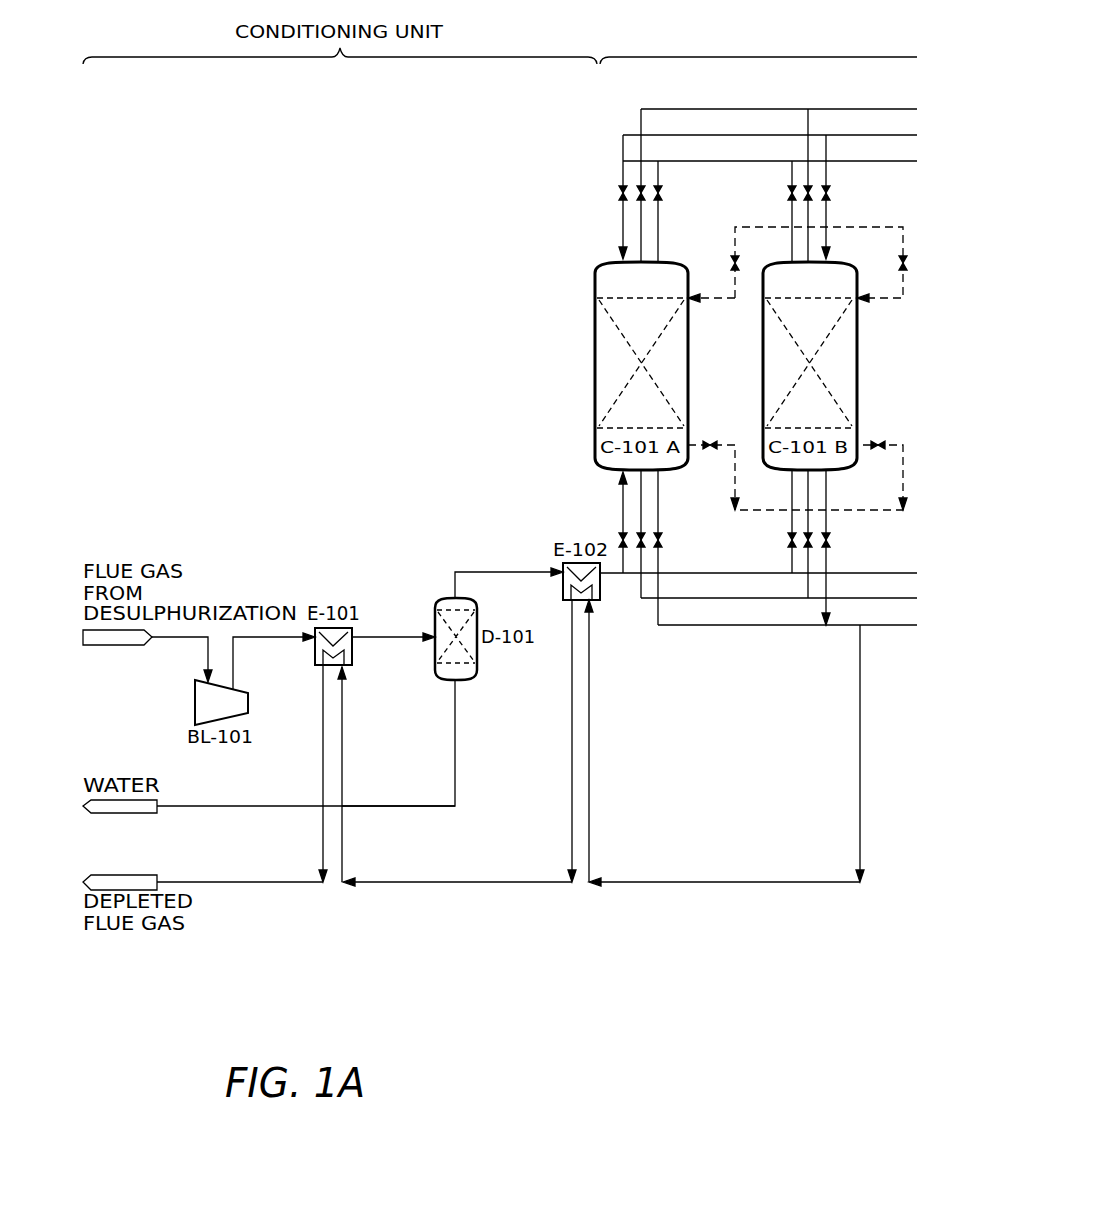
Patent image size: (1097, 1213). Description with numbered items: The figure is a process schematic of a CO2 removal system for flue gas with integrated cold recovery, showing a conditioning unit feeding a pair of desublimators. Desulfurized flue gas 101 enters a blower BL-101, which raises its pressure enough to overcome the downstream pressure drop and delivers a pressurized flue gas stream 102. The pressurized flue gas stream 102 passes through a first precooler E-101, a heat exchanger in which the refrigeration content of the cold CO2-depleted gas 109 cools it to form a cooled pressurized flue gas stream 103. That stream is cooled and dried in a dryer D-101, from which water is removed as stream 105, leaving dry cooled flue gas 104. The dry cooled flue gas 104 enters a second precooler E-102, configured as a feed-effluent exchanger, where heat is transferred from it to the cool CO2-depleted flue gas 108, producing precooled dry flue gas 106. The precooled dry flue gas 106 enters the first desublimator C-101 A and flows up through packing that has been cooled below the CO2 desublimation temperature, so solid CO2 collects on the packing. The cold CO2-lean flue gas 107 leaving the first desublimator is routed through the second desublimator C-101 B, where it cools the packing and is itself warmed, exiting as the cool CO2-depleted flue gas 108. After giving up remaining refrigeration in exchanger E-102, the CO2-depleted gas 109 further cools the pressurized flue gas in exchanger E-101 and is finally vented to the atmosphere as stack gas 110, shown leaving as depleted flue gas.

The flue gas 101 is at (178, 642).
The pressurized flue gas stream 102 is at (265, 640).
The cooled pressurized flue gas stream 103 is at (388, 635).
The dry cooled flue gas 104 is at (502, 571).
The water stream 105 is at (455, 737).
The precooled dry flue gas 106 is at (622, 512).
The cold CO2-lean flue gas 107 is at (622, 152).
The cool CO2-depleted flue gas 108 is at (827, 562).
The CO2-depleted gas 109 is at (478, 884).
The stack gas 110 is at (283, 884).